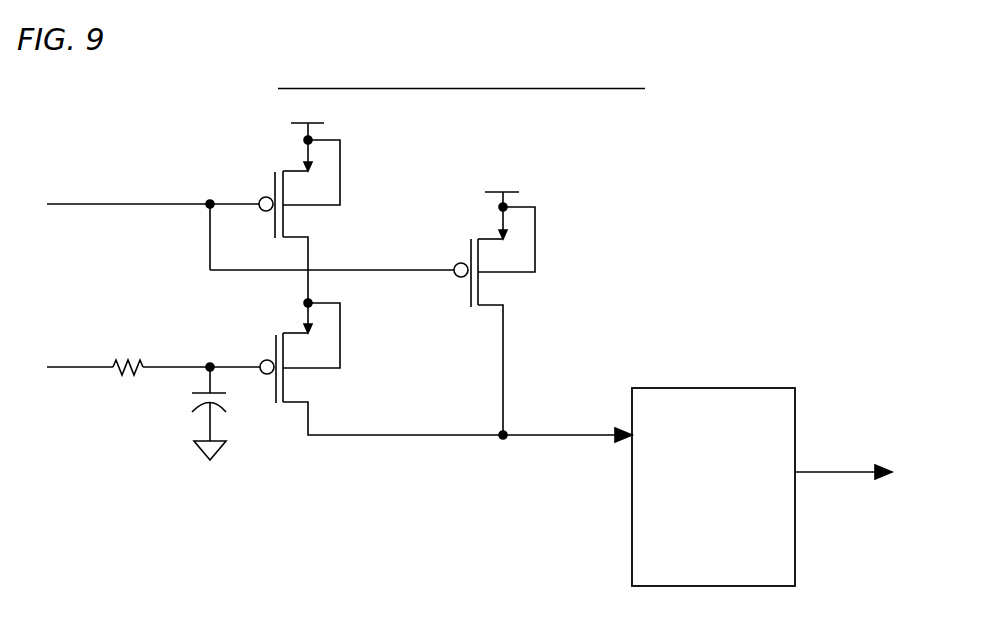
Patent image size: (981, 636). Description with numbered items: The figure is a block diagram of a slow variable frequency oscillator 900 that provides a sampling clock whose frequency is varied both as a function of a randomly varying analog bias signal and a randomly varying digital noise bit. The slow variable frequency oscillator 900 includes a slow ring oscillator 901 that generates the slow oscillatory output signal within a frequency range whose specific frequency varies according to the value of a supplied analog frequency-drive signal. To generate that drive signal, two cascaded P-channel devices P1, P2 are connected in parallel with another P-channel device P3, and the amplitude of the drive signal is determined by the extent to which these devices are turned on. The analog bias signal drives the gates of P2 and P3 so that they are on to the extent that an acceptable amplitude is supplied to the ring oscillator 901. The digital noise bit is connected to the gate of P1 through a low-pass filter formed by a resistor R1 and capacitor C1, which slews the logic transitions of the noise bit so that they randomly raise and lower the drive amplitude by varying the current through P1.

The slow variable frequency oscillator 900 is at (795, 80).
The slow ring oscillator 901 is at (707, 388).
The P-channel device P1 is at (381, 367).
The P-channel device P2 is at (299, 203).
The P-channel device P3 is at (494, 303).
The resistor R1 is at (128, 378).
The capacitor C1 is at (219, 402).